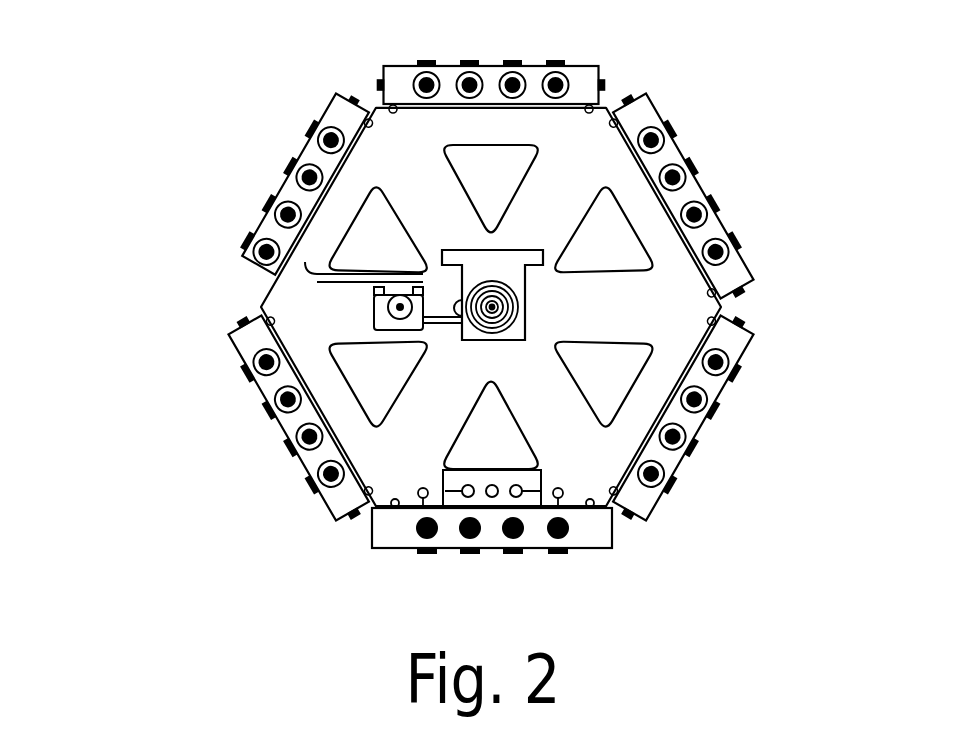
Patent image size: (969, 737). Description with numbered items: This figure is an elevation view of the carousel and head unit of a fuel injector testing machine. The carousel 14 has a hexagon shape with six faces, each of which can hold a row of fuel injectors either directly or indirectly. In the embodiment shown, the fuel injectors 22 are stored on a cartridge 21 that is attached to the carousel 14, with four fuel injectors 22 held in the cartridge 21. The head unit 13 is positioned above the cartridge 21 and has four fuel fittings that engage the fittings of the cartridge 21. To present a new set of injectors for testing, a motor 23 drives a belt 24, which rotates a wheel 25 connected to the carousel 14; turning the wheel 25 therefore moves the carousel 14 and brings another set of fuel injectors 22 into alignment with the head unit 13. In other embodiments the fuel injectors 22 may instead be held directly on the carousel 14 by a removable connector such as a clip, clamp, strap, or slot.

The head unit 13 is at (600, 518).
The carousel 14 is at (590, 137).
The cartridge 21 is at (733, 268).
The fuel injectors 22 is at (472, 73).
The motor 23 is at (345, 288).
The belt 24 is at (415, 275).
The wheel 25 is at (489, 296).